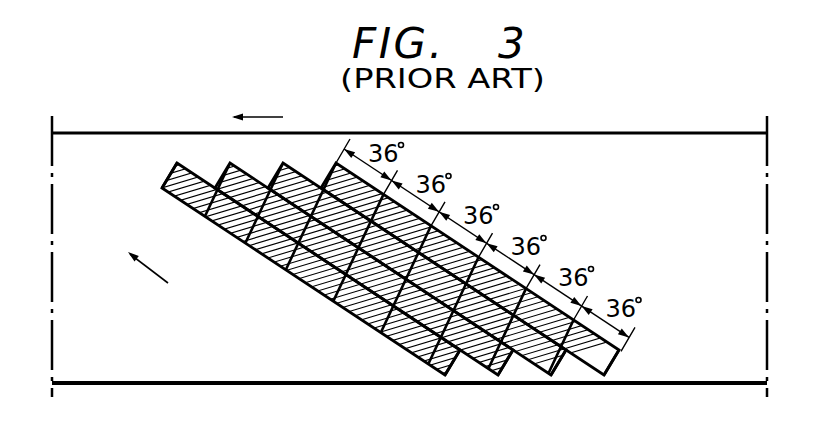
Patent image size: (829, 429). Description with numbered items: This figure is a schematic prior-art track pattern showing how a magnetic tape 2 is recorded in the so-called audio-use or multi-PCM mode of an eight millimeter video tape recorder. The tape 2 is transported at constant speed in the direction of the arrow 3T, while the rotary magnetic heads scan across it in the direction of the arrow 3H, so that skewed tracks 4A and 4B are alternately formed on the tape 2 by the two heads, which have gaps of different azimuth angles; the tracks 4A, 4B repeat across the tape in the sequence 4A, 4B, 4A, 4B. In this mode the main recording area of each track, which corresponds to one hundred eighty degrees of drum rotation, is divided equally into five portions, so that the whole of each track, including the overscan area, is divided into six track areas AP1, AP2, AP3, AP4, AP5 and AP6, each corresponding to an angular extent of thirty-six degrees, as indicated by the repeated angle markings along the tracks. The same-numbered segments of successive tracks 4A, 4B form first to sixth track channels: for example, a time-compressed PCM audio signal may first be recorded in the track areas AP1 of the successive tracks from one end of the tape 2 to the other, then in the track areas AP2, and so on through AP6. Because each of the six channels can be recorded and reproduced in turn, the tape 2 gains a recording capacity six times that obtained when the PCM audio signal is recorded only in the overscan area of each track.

The magnetic tape 2 is at (703, 368).
The tape transport direction arrow 3T is at (261, 117).
The head rotation direction arrow 3H is at (142, 283).
The first track area AP1 is at (420, 369).
The second track area AP2 is at (407, 352).
The third track area AP3 is at (332, 311).
The fourth track area AP4 is at (280, 277).
The fifth track area AP5 is at (208, 221).
The sixth track area AP6 is at (177, 206).
The track recorded by head HA 4A is at (458, 370).
The track recorded by head HB 4B is at (511, 370).